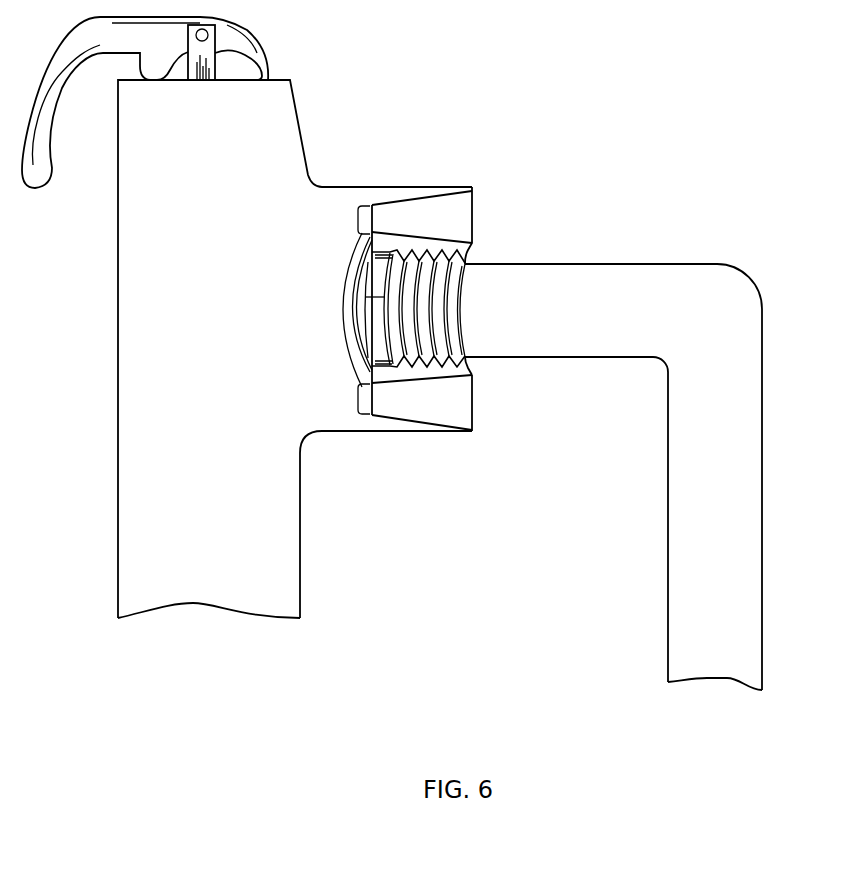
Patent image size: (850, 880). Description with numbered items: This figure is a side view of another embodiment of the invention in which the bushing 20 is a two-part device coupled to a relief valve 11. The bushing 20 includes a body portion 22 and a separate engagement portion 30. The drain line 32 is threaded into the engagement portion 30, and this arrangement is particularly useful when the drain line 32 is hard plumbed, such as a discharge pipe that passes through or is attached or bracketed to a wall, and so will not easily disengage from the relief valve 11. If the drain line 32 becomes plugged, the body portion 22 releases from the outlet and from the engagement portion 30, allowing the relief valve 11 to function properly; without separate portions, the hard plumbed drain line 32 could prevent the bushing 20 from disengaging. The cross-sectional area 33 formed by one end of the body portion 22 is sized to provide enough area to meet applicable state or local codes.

The relief valve 11 is at (340, 186).
The bushing 20 is at (455, 285).
The body portion 22 is at (472, 214).
The engagement portion 30 is at (471, 247).
The drain line 32 is at (733, 263).
The cross-sectional area 33 is at (360, 221).